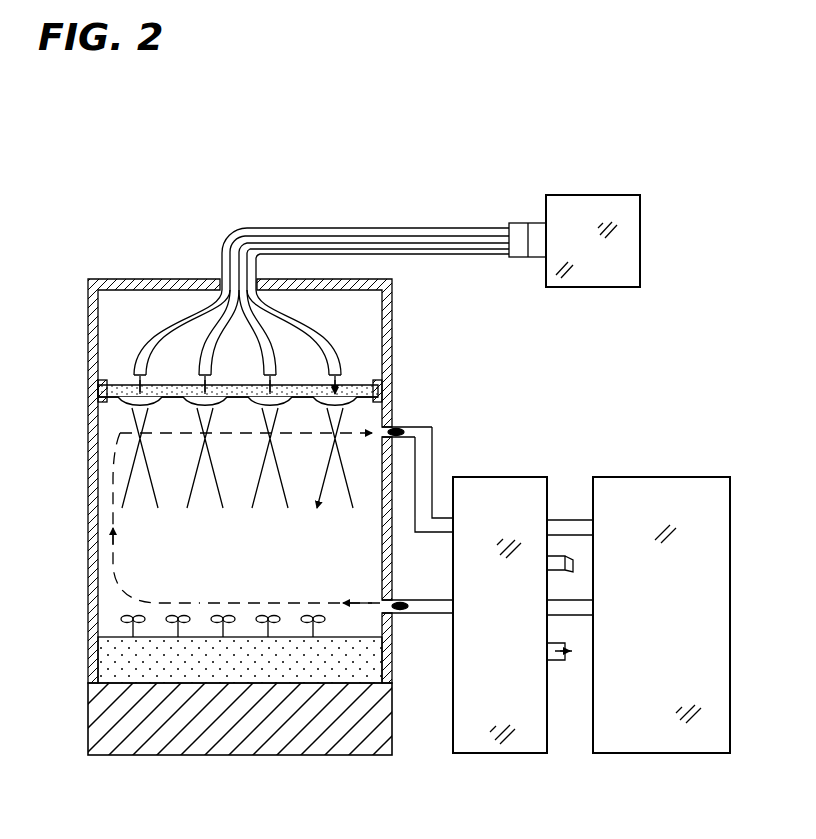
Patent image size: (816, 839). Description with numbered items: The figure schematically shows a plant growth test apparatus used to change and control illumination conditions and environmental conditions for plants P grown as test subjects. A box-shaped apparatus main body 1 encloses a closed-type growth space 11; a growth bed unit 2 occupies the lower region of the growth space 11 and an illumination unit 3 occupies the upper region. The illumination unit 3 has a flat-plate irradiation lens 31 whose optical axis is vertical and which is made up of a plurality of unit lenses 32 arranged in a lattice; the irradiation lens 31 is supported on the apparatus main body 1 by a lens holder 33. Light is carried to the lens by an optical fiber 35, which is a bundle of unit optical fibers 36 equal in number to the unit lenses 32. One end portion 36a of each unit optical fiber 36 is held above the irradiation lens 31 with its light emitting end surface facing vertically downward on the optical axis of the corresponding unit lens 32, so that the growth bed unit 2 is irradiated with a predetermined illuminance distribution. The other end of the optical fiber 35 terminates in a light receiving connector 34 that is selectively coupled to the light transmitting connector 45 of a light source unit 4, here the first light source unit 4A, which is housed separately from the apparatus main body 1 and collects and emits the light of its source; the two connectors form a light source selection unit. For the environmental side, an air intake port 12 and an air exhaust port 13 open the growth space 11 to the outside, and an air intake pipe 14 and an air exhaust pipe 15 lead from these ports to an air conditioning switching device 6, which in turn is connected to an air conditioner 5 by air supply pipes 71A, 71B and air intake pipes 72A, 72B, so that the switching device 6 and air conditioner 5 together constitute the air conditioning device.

The apparatus main body 1 is at (214, 469).
The growth bed unit 2 is at (110, 663).
The illumination unit 3 is at (88, 300).
The light source unit 4 is at (588, 190).
The first light source unit 4A is at (600, 288).
The air conditioner 5 is at (663, 754).
The air conditioning switching device 6 is at (478, 754).
The growth space 11 is at (110, 542).
The air intake port 12 is at (398, 612).
The air exhaust port 13 is at (432, 428).
The air intake pipe 14 is at (432, 616).
The air exhaust pipe 15 is at (433, 500).
The irradiation lens 31 is at (118, 385).
The unit lens 32 is at (125, 402).
The lens holder 33 is at (98, 390).
The light receiving connector 34 is at (520, 234).
The optical fiber 35 is at (362, 228).
The unit optical fiber 36 is at (162, 328).
The one end portion 36a is at (348, 374).
The light transmitting connector 45 is at (538, 252).
The air supply pipe 71A is at (578, 605).
The air supply pipe 71B is at (556, 662).
The air intake pipe 72A is at (570, 520).
The air intake pipe 72B is at (560, 560).
The plant P is at (130, 625).